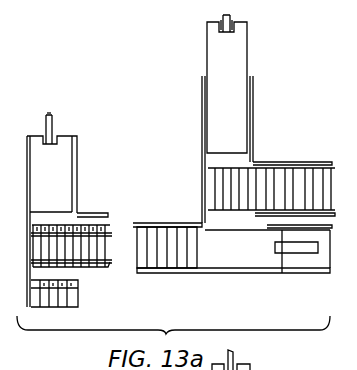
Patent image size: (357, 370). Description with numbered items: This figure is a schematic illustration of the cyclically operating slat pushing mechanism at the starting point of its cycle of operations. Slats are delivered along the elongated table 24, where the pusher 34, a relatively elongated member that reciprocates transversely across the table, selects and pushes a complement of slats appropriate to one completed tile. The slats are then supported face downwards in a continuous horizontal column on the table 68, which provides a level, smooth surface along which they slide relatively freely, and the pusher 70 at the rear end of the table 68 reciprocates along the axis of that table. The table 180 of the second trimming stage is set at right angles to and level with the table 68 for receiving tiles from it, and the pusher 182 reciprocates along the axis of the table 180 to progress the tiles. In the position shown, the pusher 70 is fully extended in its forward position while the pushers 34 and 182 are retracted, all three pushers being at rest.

The pusher 182 is at (62, 194).
The table 180 is at (74, 272).
The pusher 34 is at (250, 126).
The table 24 is at (210, 168).
The table 68 is at (196, 270).
The pusher 70 is at (247, 262).